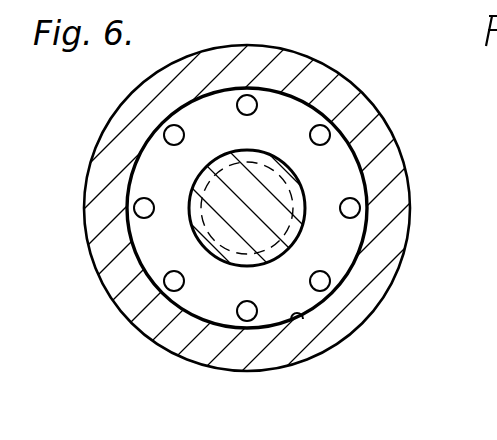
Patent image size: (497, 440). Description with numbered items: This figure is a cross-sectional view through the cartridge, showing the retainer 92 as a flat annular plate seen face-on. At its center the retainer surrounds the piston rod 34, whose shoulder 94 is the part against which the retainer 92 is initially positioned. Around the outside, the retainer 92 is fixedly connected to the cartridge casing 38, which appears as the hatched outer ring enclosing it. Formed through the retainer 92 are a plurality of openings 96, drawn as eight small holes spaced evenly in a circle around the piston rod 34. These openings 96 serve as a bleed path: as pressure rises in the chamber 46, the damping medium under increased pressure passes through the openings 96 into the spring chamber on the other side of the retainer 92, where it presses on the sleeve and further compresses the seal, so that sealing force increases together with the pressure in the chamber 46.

The piston rod 34 is at (298, 218).
The cartridge casing 38 is at (385, 249).
The chamber 46 is at (301, 314).
The retainer 92 is at (348, 177).
The shoulder 94 is at (283, 163).
The openings 96 is at (243, 321).